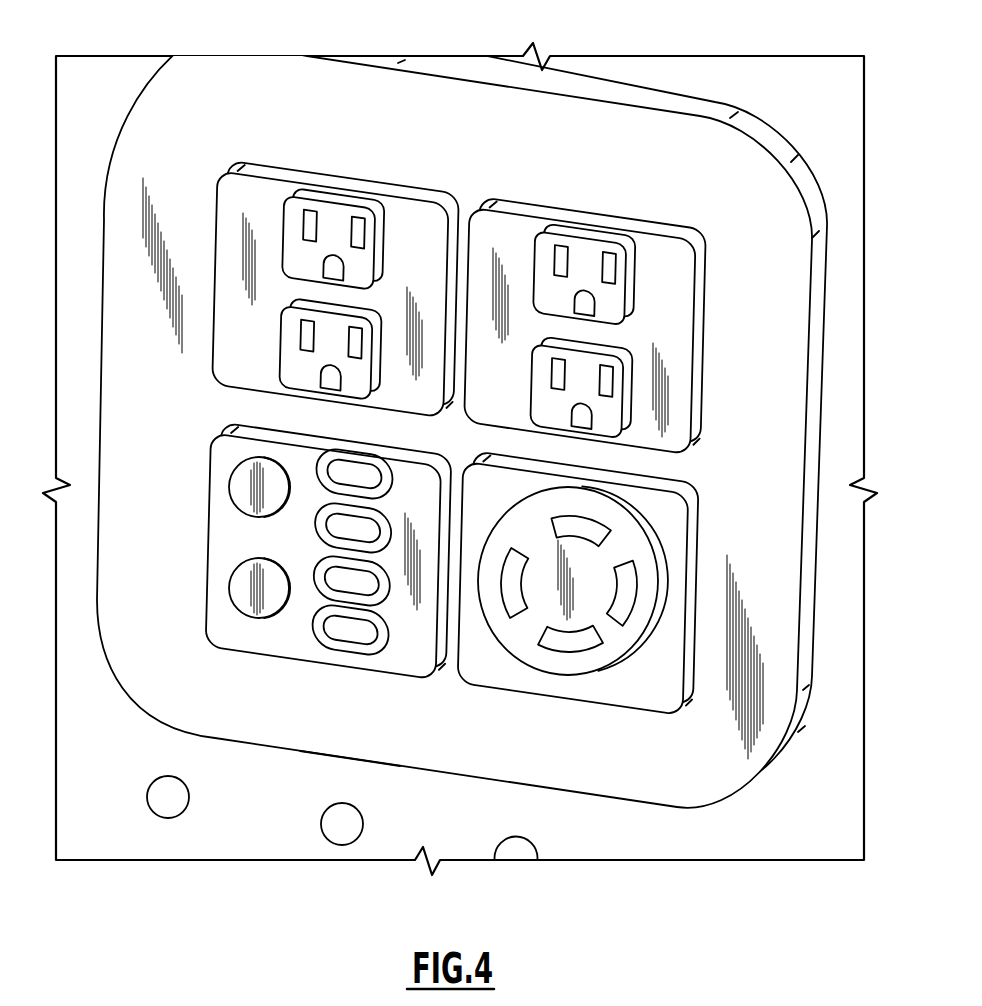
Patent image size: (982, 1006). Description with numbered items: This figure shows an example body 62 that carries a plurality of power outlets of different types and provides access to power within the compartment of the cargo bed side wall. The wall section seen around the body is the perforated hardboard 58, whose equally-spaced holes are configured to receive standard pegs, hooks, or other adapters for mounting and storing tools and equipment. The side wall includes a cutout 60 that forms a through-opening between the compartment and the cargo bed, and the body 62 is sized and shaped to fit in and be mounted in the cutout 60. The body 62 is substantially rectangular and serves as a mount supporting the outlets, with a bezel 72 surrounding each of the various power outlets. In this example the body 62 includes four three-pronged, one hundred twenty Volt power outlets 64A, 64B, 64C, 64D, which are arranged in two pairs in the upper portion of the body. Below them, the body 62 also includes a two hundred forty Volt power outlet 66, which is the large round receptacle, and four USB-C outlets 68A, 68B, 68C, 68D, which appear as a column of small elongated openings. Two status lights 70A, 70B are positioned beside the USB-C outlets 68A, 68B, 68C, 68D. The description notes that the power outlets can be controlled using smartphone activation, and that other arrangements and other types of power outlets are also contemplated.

The perforated hardboard 58 is at (128, 833).
The cutout 60 is at (353, 750).
The body 62 is at (428, 111).
The bezel 72 is at (610, 150).
The 120 Volt power outlet 64A is at (279, 207).
The 120 Volt power outlet 64B is at (277, 357).
The 120 Volt power outlet 64C is at (646, 270).
The 120 Volt power outlet 64D is at (646, 375).
The 240 Volt power outlet 66 is at (643, 546).
The USB-C outlet 68A is at (302, 455).
The USB-C outlet 68B is at (303, 502).
The USB-C outlet 68C is at (300, 569).
The USB-C outlet 68D is at (303, 636).
The status light 70A is at (253, 505).
The status light 70B is at (250, 596).